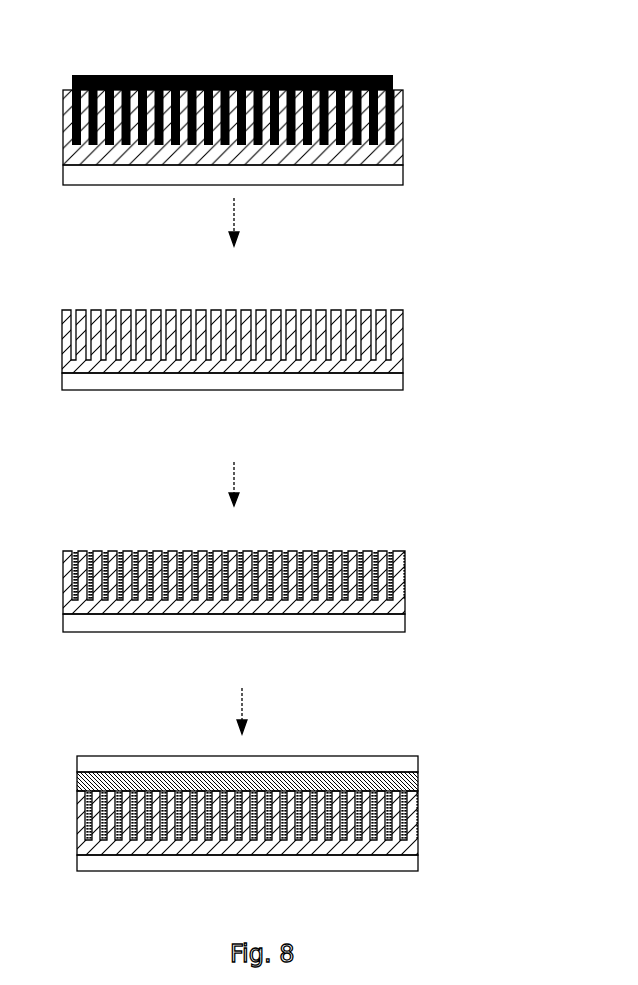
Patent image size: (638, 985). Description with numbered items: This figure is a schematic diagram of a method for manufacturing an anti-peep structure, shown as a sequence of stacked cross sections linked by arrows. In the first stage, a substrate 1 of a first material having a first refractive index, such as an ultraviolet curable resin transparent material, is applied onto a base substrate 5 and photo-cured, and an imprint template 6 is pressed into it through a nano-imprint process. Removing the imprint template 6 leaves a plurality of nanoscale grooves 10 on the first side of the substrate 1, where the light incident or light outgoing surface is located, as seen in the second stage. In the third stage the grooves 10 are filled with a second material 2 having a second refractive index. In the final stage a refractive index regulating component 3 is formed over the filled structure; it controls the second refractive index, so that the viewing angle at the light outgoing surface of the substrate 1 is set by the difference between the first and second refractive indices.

The substrate 1 is at (70, 148).
The second material 2 is at (374, 560).
The refractive index regulating component 3 is at (77, 783).
The base substrate 5 is at (358, 178).
The imprint template 6 is at (222, 75).
The grooves 10 is at (387, 327).